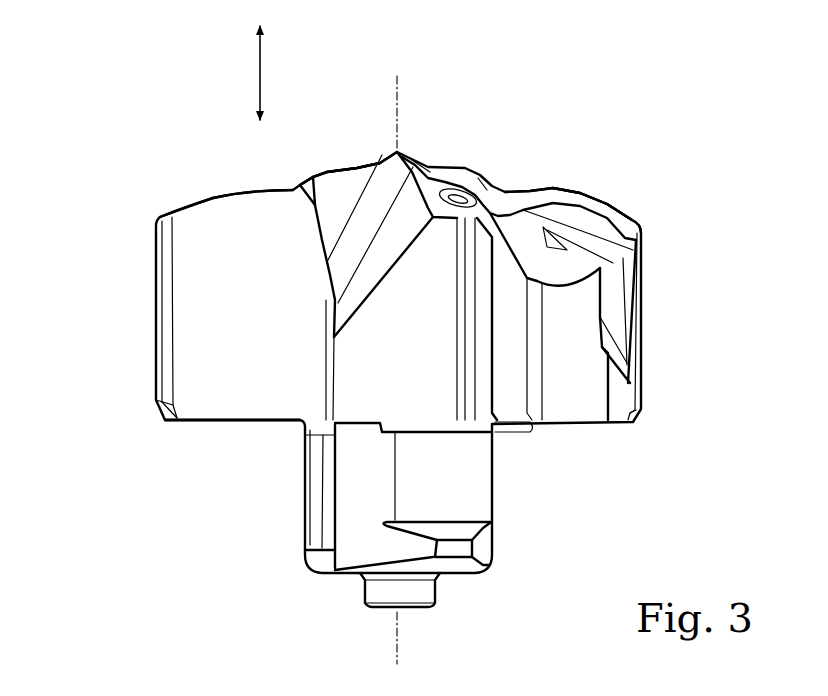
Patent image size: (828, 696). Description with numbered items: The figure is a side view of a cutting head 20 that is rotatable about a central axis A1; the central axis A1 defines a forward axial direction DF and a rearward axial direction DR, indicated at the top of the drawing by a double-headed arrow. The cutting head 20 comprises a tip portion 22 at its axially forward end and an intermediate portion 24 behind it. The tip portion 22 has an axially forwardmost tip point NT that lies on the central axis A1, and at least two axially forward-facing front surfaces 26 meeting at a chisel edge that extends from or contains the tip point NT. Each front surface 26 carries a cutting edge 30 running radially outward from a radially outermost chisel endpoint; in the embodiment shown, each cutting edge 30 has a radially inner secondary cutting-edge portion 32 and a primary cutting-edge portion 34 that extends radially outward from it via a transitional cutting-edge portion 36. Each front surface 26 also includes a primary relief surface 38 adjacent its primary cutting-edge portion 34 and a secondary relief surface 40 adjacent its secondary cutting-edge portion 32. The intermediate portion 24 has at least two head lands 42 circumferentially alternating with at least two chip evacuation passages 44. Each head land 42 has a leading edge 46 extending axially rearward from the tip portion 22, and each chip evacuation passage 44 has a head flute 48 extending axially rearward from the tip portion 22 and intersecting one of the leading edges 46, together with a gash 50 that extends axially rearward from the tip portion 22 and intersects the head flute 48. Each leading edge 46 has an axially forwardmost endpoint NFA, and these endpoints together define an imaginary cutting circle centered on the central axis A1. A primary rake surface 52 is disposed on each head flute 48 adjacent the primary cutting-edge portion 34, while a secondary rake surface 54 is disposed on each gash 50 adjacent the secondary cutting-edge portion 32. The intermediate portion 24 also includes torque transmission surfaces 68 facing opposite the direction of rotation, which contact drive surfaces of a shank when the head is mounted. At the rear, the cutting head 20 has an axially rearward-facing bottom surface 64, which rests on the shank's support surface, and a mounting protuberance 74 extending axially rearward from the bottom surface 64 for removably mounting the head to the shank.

The cutting head 20 is at (118, 207).
The tip portion 22 is at (627, 223).
The intermediate portion 24 is at (602, 380).
The front surface 26 is at (527, 225).
The cutting edge 30 is at (245, 186).
The secondary cutting-edge portion 32 is at (358, 168).
The primary cutting-edge portion 34 is at (210, 200).
The transitional cutting-edge portion 36 is at (308, 180).
The primary relief surface 38 is at (598, 213).
The secondary relief surface 40 is at (475, 182).
The head land 42 is at (153, 258).
The chip evacuation passage 44 is at (292, 389).
The leading edge 46 is at (155, 348).
The head flute 48 is at (224, 308).
The gash 50 is at (360, 261).
The primary rake surface 52 is at (264, 232).
The secondary rake surface 54 is at (350, 201).
The bottom surface 64 is at (240, 423).
The torque transmission surface 68 is at (580, 351).
The mounting protuberance 74 is at (452, 498).
The central axis A1 is at (397, 371).
The tip point NT is at (399, 152).
The axially forwardmost endpoint NFA is at (158, 216).
The forward axial direction DF is at (259, 61).
The rearward axial direction DR is at (260, 87).